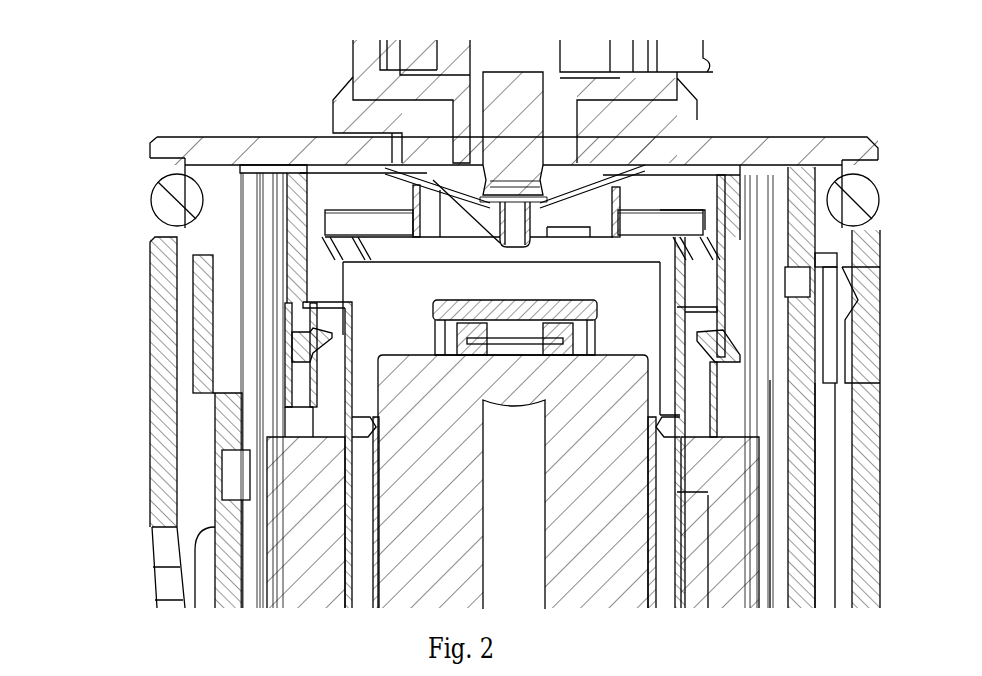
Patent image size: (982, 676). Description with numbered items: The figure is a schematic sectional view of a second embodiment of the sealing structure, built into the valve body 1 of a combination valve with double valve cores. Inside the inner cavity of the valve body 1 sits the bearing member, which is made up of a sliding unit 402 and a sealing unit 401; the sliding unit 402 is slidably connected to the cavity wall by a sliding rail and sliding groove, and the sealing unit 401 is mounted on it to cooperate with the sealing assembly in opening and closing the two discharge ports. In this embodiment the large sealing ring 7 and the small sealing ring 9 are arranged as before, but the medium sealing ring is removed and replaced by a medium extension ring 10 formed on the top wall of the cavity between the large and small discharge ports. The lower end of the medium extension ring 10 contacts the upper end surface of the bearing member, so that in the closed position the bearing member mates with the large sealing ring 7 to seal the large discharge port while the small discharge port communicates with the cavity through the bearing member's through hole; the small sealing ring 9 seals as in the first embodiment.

The valve body 1 is at (290, 157).
The large sealing ring 7 is at (433, 178).
The small sealing ring 9 is at (500, 245).
The medium extension ring 10 is at (545, 188).
The sealing unit 401 is at (495, 232).
The sliding unit 402 is at (430, 215).